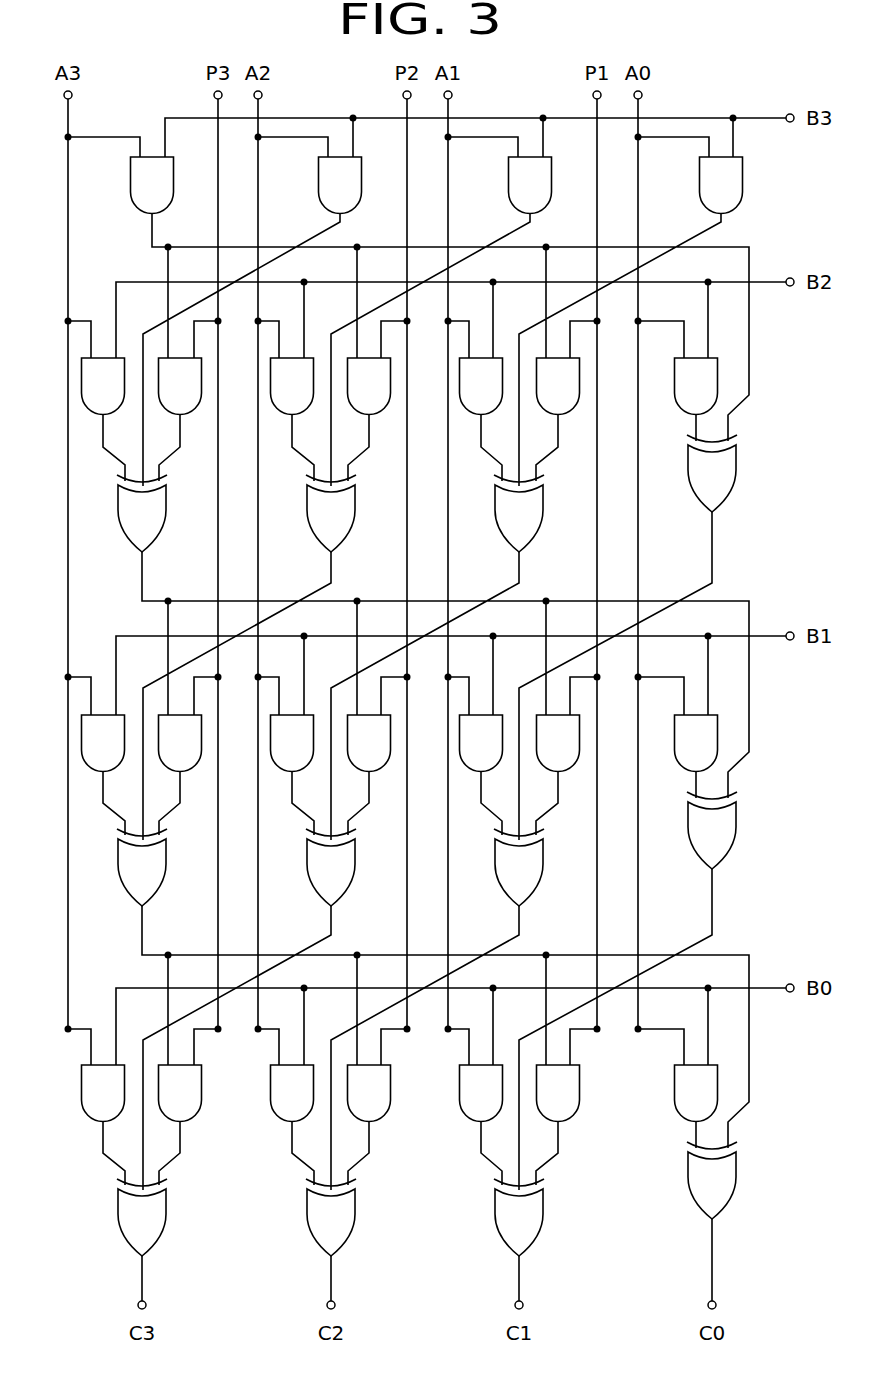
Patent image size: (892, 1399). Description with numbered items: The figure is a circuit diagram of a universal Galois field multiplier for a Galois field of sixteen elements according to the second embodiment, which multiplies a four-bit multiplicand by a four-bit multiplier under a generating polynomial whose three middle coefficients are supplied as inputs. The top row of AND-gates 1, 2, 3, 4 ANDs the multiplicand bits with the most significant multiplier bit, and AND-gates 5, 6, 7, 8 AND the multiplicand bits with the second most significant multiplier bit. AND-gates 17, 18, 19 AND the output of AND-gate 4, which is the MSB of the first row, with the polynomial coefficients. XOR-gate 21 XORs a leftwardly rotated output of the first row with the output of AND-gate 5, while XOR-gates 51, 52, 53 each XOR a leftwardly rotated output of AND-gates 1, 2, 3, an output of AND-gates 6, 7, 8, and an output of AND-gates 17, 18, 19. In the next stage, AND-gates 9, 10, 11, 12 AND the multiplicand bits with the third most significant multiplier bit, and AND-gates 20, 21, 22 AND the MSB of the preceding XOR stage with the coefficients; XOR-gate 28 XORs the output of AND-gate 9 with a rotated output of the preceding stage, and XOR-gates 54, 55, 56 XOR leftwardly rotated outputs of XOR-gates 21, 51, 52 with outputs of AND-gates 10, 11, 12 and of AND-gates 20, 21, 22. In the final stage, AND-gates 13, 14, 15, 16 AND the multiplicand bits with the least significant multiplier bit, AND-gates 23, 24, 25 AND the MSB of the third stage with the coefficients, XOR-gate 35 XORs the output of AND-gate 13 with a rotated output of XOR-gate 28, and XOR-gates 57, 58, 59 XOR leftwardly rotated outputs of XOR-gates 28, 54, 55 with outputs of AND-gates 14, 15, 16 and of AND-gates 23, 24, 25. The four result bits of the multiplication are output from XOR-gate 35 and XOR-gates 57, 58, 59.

The AND-gate 1 is at (721, 185).
The AND-gate 2 is at (530, 185).
The AND-gate 3 is at (340, 185).
The AND-gate 4 is at (152, 185).
The AND-gate 5 is at (696, 386).
The AND-gate 6 is at (481, 386).
The AND-gate 7 is at (292, 386).
The AND-gate 8 is at (103, 386).
The AND-gate 9 is at (696, 743).
The AND-gate 10 is at (481, 743).
The AND-gate 11 is at (292, 743).
The AND-gate 12 is at (103, 743).
The AND-gate 13 is at (696, 1093).
The AND-gate 14 is at (481, 1093).
The AND-gate 15 is at (292, 1093).
The AND-gate 16 is at (103, 1093).
The AND-gate 17 is at (558, 386).
The AND-gate 18 is at (369, 386).
The AND-gate 19 is at (180, 386).
The AND-gate 20 is at (558, 743).
The AND-gate / XOR-gate 21 is at (543, 603).
The AND-gate 22 is at (180, 743).
The AND-gate 23 is at (558, 1093).
The AND-gate 24 is at (369, 1093).
The AND-gate 25 is at (180, 1093).
The XOR-gate 28 is at (712, 830).
The XOR-gate 35 is at (712, 1180).
The XOR-gate 51 is at (519, 513).
The XOR-gate 52 is at (331, 513).
The XOR-gate 53 is at (142, 513).
The XOR-gate 54 is at (519, 867).
The XOR-gate 55 is at (331, 867).
The XOR-gate 56 is at (142, 867).
The XOR-gate 57 is at (519, 1217).
The XOR-gate 58 is at (331, 1217).
The XOR-gate 59 is at (142, 1217).